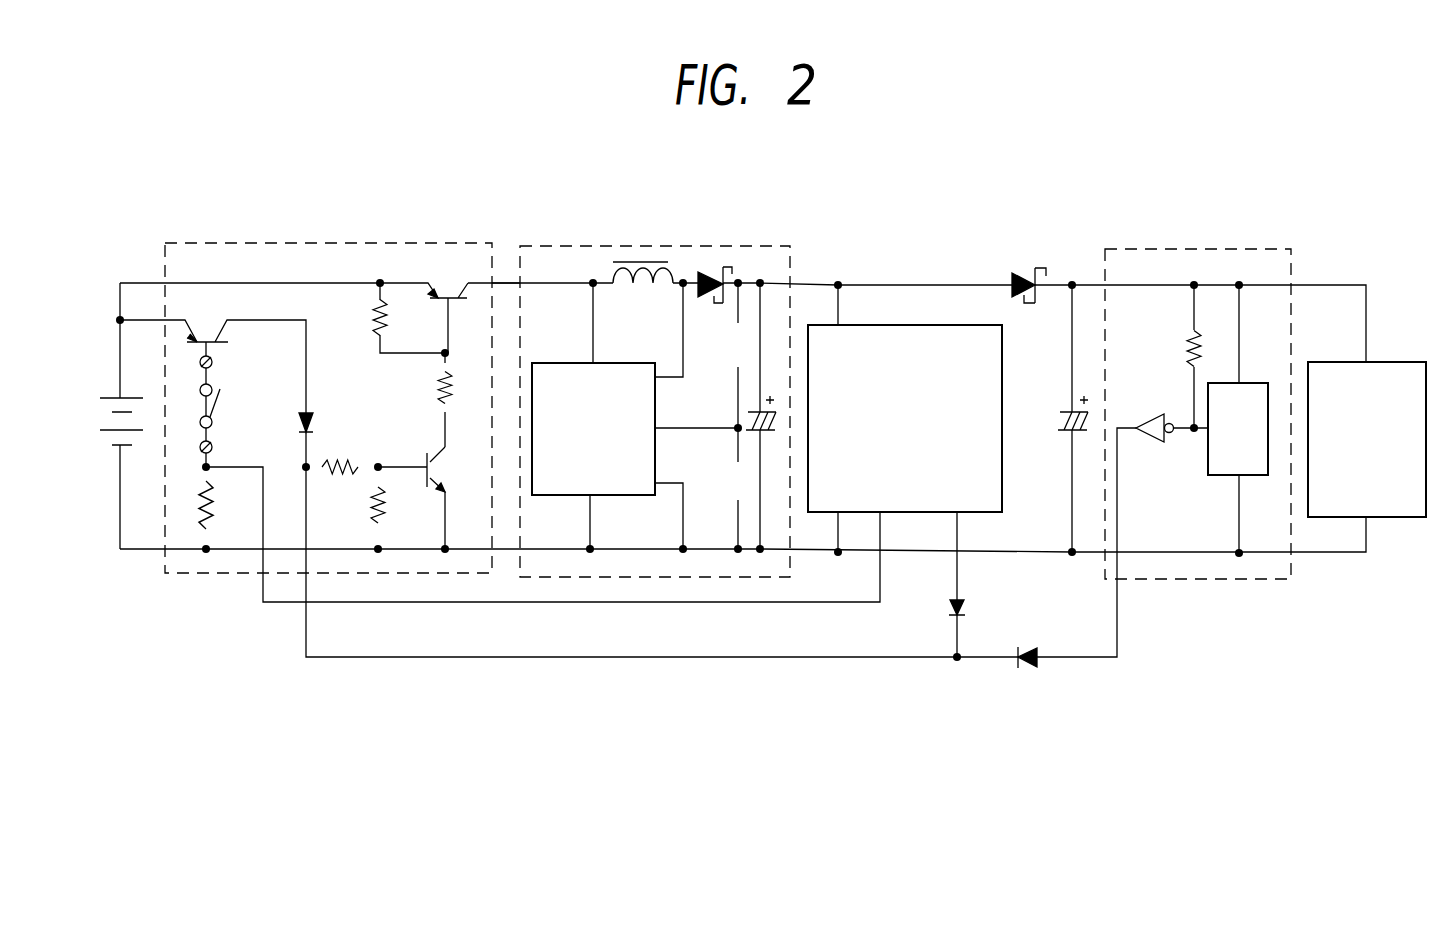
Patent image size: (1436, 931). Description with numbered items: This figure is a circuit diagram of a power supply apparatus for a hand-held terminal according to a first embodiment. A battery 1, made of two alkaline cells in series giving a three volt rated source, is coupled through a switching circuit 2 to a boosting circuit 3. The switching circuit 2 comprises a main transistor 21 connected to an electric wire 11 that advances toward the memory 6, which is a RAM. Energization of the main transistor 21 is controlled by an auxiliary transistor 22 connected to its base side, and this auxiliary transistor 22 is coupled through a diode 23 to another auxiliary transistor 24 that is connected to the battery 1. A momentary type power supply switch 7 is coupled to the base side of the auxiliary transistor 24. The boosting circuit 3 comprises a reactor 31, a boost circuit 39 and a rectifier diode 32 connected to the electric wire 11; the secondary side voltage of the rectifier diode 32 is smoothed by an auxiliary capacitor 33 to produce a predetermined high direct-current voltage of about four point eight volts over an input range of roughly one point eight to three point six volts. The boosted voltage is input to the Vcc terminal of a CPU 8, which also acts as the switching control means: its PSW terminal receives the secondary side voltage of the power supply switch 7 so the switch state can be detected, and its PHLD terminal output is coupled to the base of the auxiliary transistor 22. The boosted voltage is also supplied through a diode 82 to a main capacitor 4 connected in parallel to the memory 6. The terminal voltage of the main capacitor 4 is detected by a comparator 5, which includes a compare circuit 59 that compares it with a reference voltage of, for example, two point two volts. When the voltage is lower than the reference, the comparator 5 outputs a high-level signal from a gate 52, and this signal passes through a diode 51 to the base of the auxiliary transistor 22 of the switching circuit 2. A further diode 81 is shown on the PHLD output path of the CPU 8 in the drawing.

The battery 1 is at (126, 400).
The switching circuit 2 is at (430, 243).
The boosting circuit 3 is at (743, 246).
The main capacitor 4 is at (1058, 422).
The comparator 5 is at (1244, 248).
The memory 6 is at (1391, 363).
The power supply switch 7 is at (225, 413).
The CPU 8 is at (1002, 368).
The electric wire 11 is at (504, 282).
The main transistor 21 is at (447, 282).
The auxiliary transistor 22 is at (447, 468).
The diode 23 is at (316, 415).
The auxiliary transistor 24 is at (206, 323).
The reactor 31 is at (646, 300).
The rectifier diode 32 is at (733, 264).
The auxiliary capacitor 33 is at (745, 418).
The boost circuit 39 is at (559, 363).
The diode 51 is at (1020, 649).
The gate 52 is at (1148, 414).
The compare circuit 59 is at (1222, 476).
The diode 81 is at (965, 607).
The diode 82 is at (1024, 270).